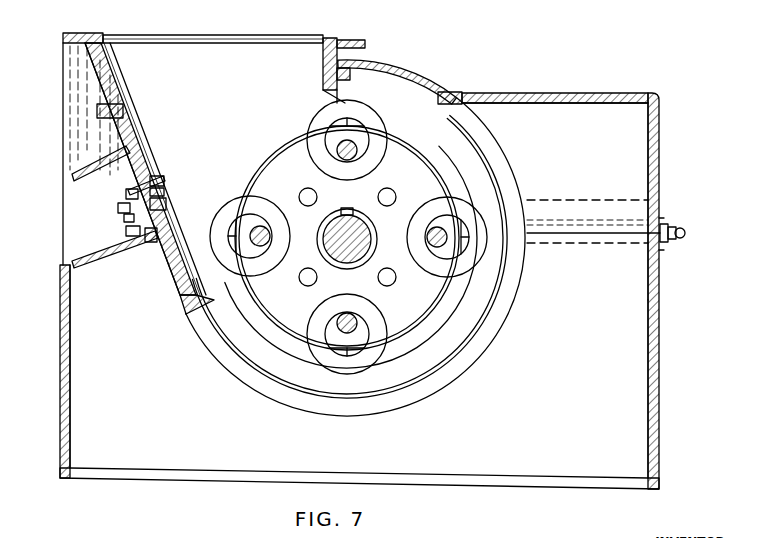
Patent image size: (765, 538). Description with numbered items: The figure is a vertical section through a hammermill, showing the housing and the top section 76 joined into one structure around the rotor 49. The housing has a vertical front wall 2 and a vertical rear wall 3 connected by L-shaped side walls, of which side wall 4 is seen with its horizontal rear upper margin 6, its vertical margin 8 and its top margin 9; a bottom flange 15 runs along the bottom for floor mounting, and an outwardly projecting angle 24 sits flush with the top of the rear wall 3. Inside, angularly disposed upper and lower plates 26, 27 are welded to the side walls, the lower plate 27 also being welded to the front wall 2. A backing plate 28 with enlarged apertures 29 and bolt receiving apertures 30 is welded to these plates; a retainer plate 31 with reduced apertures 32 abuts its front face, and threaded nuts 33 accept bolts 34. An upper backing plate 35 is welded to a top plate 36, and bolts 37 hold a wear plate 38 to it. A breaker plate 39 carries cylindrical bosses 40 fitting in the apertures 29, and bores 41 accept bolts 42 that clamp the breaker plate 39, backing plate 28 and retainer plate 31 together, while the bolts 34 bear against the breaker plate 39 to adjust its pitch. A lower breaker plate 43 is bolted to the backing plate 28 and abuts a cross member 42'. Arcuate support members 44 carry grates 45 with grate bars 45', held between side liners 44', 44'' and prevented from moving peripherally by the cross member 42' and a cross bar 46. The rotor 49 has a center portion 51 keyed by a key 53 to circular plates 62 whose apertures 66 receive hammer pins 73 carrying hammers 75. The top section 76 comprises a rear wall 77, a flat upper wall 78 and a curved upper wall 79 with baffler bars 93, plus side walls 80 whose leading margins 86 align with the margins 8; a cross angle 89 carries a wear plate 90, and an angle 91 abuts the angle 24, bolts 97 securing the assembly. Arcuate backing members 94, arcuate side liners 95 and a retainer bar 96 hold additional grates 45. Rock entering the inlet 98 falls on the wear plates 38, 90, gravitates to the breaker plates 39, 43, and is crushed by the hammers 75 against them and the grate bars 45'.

The front wall 2 is at (60, 300).
The rear wall 3 is at (660, 340).
The side wall 4 is at (70, 400).
The rear upper margin 6 is at (573, 233).
The vertical margin 8 is at (340, 95).
The top margin 9 is at (300, 36).
The bottom flange 15 is at (160, 481).
The outwardly projecting angle 24 is at (674, 243).
The upper plate 26 is at (85, 165).
The lower plate 27 is at (87, 268).
The backing plate 28 is at (180, 280).
The enlarged aperture 29 is at (143, 187).
The bolt receiving aperture 30 is at (118, 207).
The retainer plate 31 is at (126, 193).
The bolt receiving aperture 32 is at (125, 217).
The threaded nut 33 is at (152, 242).
The bolt 34 is at (130, 230).
The upper backing plate 35 is at (87, 63).
The top plate 36 is at (90, 34).
The bolt 37 is at (97, 113).
The wear plate 38 is at (143, 124).
The breaker plate 39 is at (155, 158).
The cylindrical boss 40 is at (166, 204).
The bore 41 is at (164, 181).
The bolt 42 is at (176, 191).
The cross member 42' is at (169, 319).
The lower breaker plate 43 is at (187, 290).
The arcuate support member 44 is at (350, 268).
The side liner 44' is at (464, 269).
The side liner 44'' is at (201, 336).
The grate 45 is at (231, 386).
The grate bar 45' is at (377, 258).
The cross bar 46 is at (500, 247).
The rotor 49 is at (260, 162).
The center portion 51 is at (372, 233).
The key 53 is at (348, 211).
The circular plate 62 is at (300, 141).
The aperture 66 is at (356, 328).
The hammer pin 73 is at (355, 150).
The hammer 75 is at (310, 121).
The top section 76 is at (618, 93).
The rear wall 77 is at (660, 167).
The flat upper wall 78 is at (540, 93).
The curved upper wall 79 is at (425, 72).
The side wall 80 is at (640, 137).
The leading margin 86 is at (345, 101).
The cross angle 89 is at (360, 42).
The wear plate 90 is at (323, 64).
The outwardly projecting angle 91 is at (686, 235).
The baffler bar 93 is at (462, 95).
The arcuate backing member 94 is at (510, 190).
The arcuate side liner 95 is at (457, 180).
The retainer bar 96 is at (503, 232).
The bolt 97 is at (672, 230).
The inlet 98 is at (213, 27).